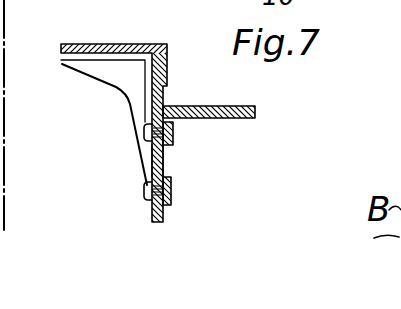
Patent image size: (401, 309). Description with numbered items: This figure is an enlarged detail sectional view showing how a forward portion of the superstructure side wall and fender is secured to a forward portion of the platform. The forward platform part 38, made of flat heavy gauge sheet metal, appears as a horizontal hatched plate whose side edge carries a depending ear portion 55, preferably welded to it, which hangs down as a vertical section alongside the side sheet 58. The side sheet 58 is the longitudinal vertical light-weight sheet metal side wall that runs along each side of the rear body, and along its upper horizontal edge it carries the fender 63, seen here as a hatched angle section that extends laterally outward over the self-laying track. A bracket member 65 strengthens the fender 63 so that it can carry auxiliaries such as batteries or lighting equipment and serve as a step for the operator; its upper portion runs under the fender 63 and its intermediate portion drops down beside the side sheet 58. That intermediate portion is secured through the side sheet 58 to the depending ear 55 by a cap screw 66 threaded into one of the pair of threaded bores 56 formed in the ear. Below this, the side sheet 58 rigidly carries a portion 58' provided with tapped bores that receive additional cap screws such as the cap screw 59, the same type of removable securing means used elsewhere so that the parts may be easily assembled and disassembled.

The fender 63 is at (110, 44).
The bracket member 65 is at (100, 67).
The forward platform part 38 is at (237, 100).
The threaded bore 56 is at (174, 133).
The cap screw 66 is at (144, 130).
The depending ear portion 55 is at (165, 165).
The side sheet 58 is at (189, 184).
The portion provided with tapped bores 58' is at (193, 205).
The cap screw 59 is at (145, 190).